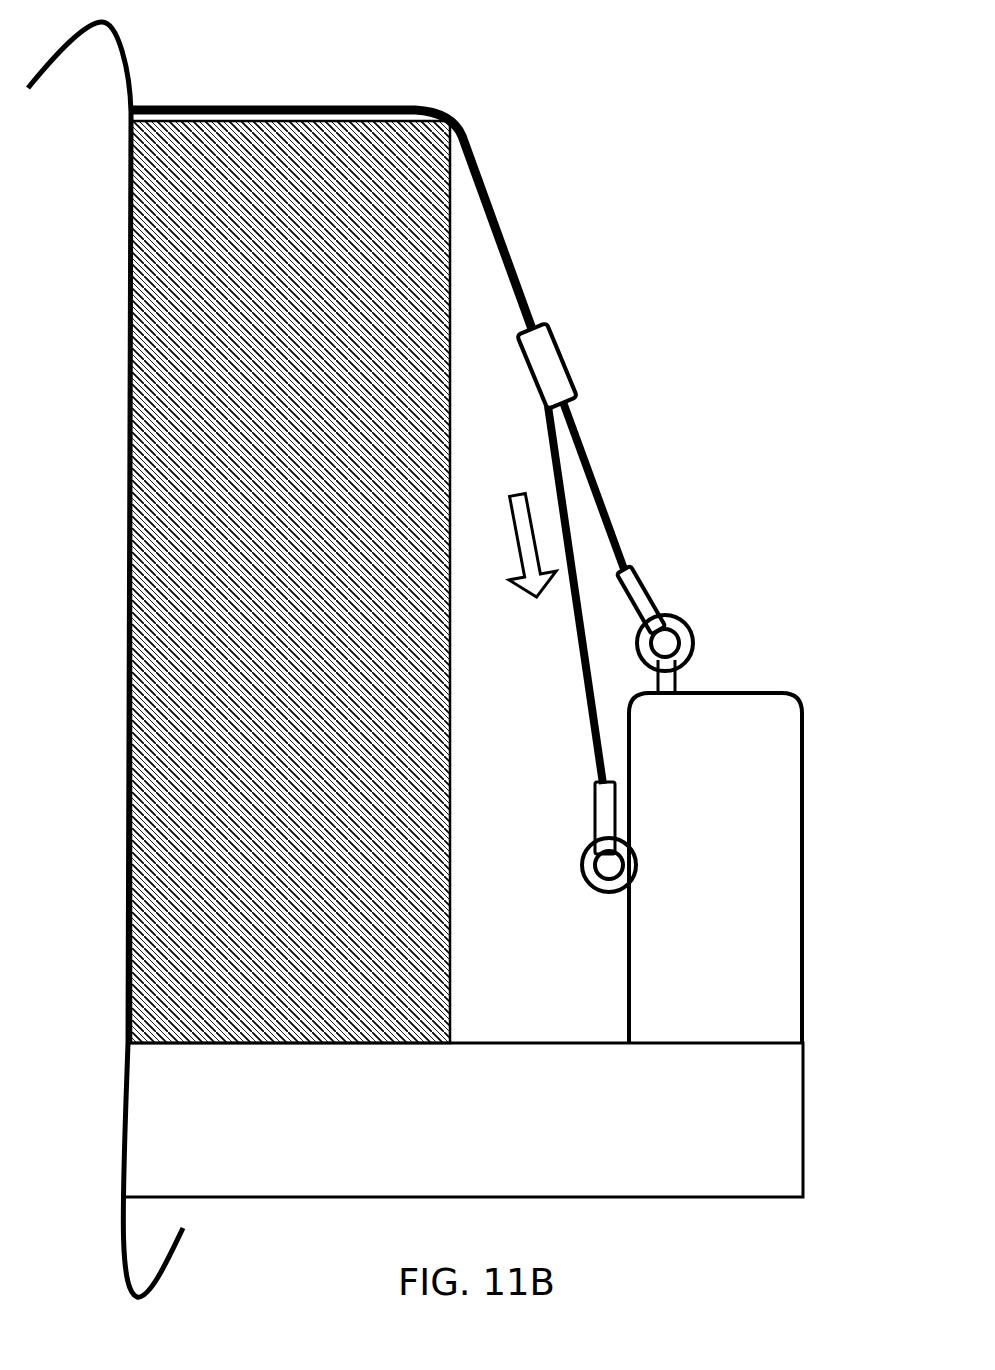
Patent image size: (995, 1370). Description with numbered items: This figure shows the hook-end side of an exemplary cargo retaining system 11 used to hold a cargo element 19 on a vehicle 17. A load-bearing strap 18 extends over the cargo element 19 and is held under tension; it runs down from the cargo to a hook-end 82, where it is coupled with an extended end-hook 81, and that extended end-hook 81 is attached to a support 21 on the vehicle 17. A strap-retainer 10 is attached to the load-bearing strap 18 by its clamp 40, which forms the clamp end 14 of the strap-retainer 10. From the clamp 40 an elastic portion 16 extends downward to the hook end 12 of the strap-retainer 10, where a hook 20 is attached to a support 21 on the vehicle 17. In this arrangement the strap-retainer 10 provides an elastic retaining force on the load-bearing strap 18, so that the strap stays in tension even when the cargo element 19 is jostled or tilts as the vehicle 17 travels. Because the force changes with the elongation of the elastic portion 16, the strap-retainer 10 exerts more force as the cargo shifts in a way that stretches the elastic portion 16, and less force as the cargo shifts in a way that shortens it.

The cargo element 19 is at (318, 152).
The cargo retaining system 11 is at (682, 208).
The load-bearing strap 18 is at (507, 226).
The strap-retainer 10 is at (592, 344).
The clamp 40 is at (560, 345).
The clamp end 14 is at (543, 415).
The elastic portion 16 is at (577, 627).
The hook-end 82 is at (674, 563).
The extended end-hook 81 is at (642, 595).
The support 21 is at (680, 627).
The vehicle 17 is at (783, 812).
The hook end 12 is at (552, 801).
The hook 20 is at (610, 840).